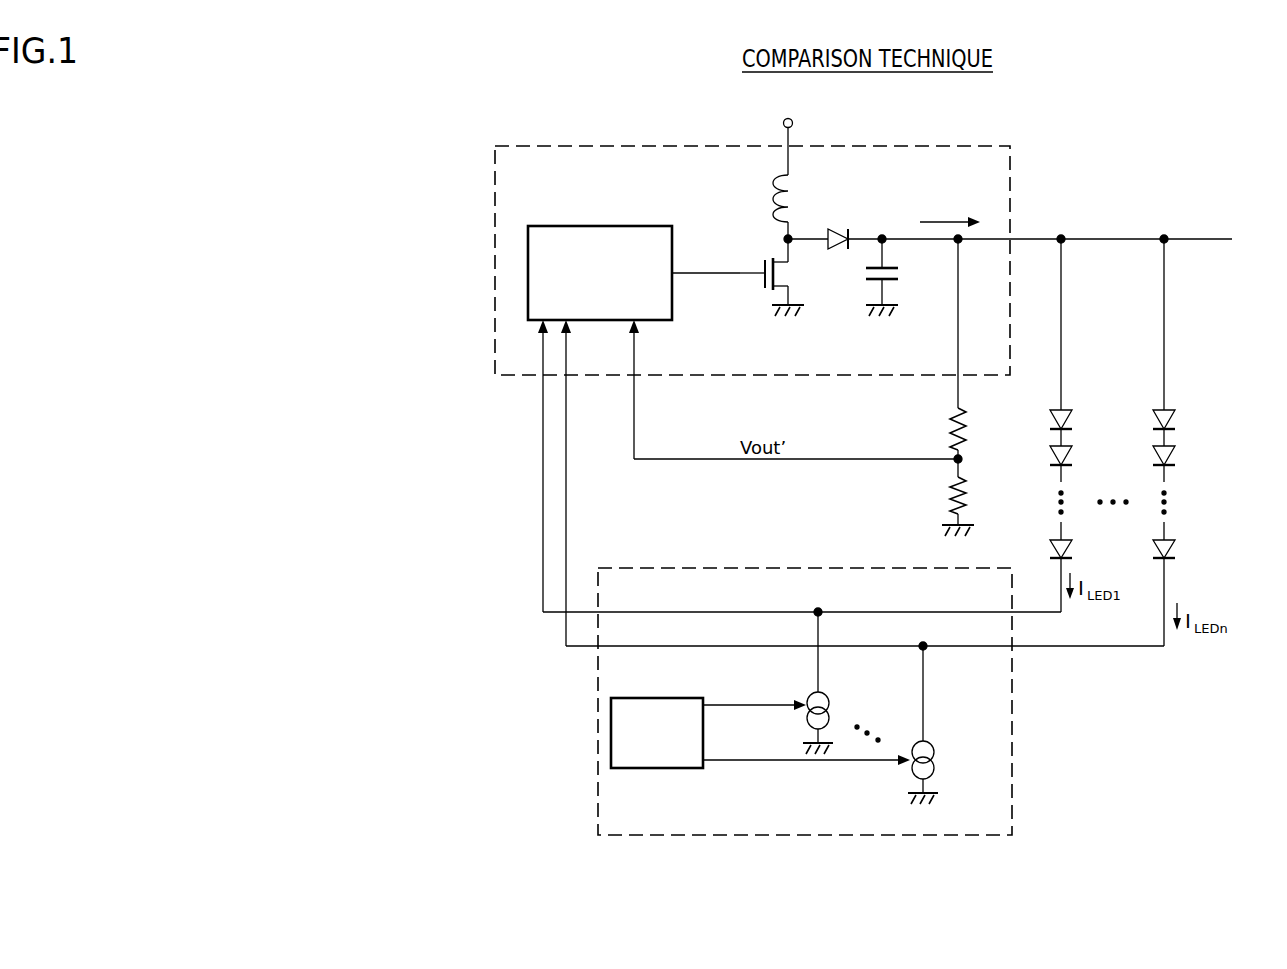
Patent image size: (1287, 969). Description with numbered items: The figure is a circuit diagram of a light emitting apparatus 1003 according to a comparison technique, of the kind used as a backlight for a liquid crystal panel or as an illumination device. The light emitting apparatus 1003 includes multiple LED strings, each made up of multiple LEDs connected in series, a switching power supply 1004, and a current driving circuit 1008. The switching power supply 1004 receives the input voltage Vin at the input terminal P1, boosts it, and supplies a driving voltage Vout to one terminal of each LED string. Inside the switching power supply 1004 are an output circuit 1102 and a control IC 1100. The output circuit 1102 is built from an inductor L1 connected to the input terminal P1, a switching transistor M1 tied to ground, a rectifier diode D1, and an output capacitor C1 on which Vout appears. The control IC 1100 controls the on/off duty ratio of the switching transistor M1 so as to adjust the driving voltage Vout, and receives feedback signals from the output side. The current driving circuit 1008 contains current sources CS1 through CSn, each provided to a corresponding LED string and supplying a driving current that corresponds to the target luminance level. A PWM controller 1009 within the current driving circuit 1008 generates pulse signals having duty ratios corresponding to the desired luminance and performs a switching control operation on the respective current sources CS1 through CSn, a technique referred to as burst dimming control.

The switching power supply 1004 is at (971, 126).
The control IC 1100 is at (639, 205).
The output circuit 1102 is at (809, 303).
The light emitting apparatus 1003 is at (852, 724).
The current driving circuit 1008 is at (1012, 776).
The PWM controller 1009 is at (660, 768).
The input terminal P1 is at (793, 123).
The inductor L1 is at (777, 192).
The rectifier diode D1 is at (832, 226).
The switching transistor M1 is at (794, 270).
The output capacitor C1 is at (906, 277).
The current source CS1 is at (832, 698).
The current source CSn is at (942, 712).